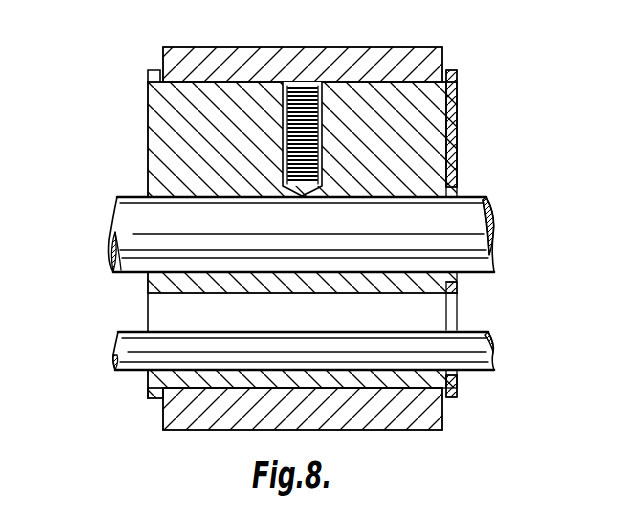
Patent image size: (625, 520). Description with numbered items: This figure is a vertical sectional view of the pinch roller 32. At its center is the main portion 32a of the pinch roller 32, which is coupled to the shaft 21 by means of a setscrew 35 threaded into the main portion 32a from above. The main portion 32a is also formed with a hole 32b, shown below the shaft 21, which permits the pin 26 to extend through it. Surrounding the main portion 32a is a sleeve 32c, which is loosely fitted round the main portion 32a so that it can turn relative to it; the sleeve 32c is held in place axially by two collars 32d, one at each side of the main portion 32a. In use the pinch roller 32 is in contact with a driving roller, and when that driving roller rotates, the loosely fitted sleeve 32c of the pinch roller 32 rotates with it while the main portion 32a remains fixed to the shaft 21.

The shaft 21 is at (118, 209).
The pin 26 is at (471, 366).
The pinch roller 32 is at (140, 85).
The main portion 32a is at (165, 120).
The hole 32b is at (165, 312).
The sleeve 32c is at (231, 47).
The collar 32d is at (151, 70).
The setscrew 35 is at (283, 132).